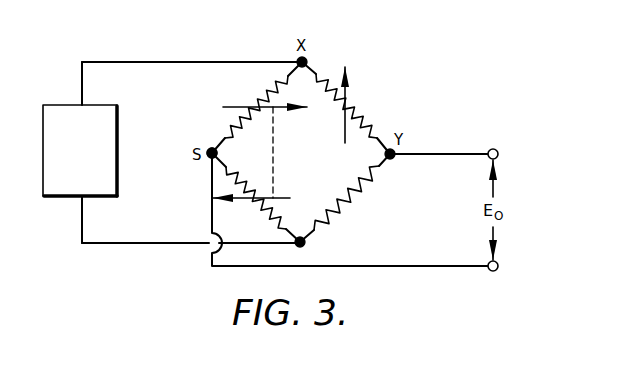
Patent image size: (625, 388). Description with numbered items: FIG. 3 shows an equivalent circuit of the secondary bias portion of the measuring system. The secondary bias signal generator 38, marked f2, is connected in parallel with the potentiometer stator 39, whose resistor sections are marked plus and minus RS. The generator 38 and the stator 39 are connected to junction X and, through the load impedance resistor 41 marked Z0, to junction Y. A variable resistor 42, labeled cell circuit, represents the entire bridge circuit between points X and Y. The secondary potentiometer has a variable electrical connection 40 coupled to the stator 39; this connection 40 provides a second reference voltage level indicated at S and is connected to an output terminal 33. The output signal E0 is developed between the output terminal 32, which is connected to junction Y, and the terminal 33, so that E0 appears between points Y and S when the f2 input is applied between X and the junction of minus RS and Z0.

The output terminal 32 is at (498, 151).
The output terminal 33 is at (499, 266).
The secondary bias signal generator 38 is at (107, 127).
The potentiometer stator 39 is at (250, 122).
The variable electrical connection 40 is at (209, 150).
The load impedance resistor 41 is at (345, 202).
The variable resistor 42 is at (326, 84).